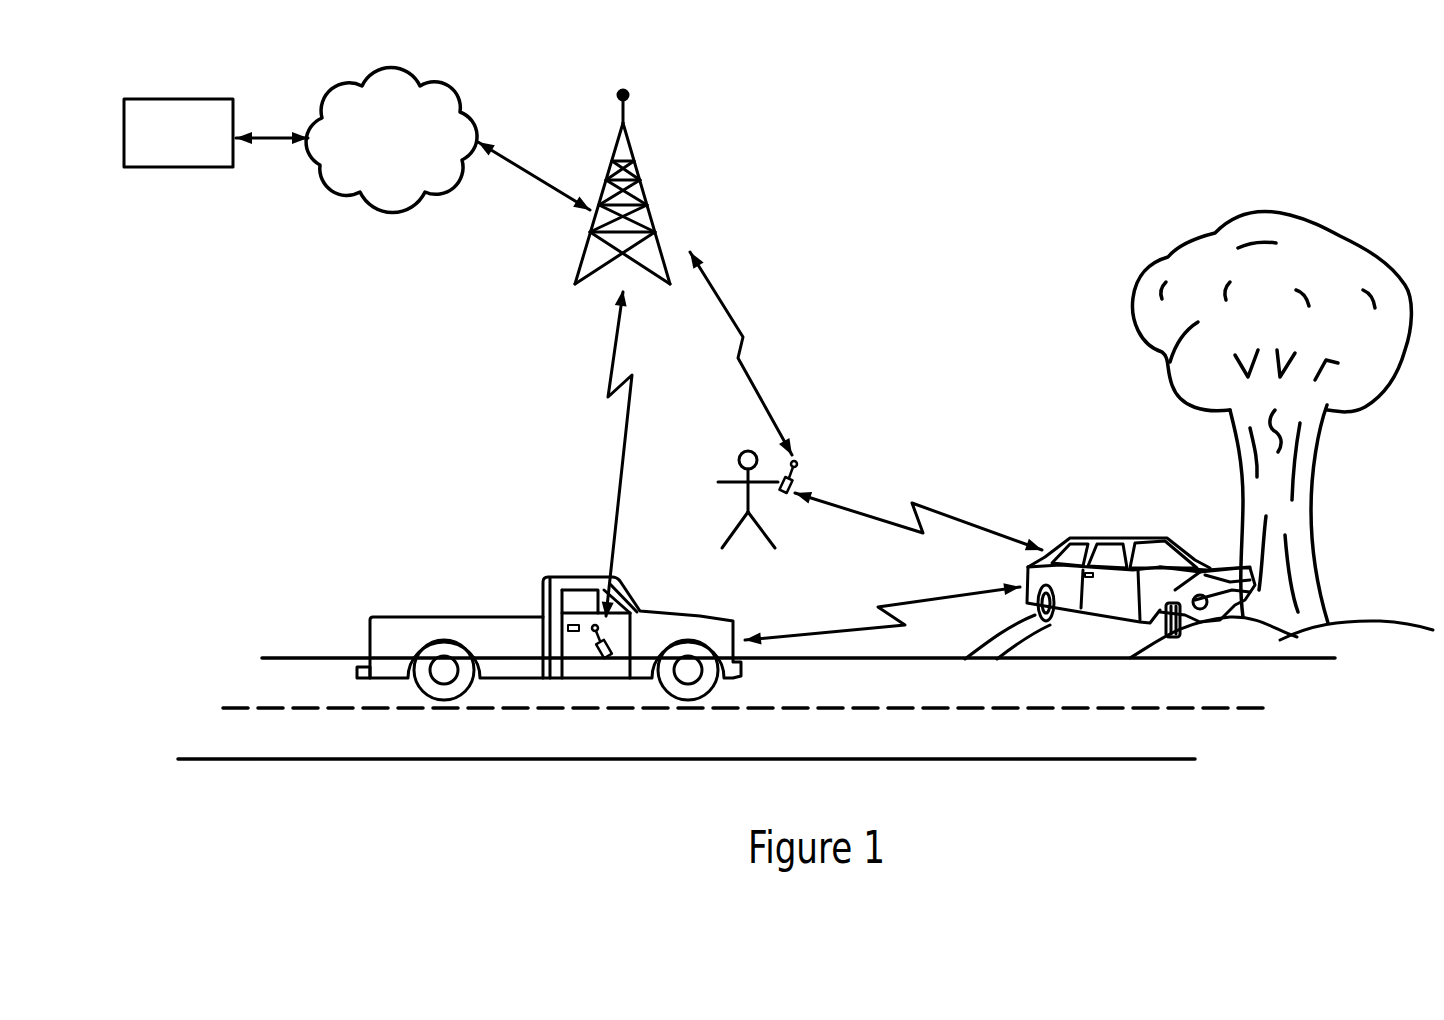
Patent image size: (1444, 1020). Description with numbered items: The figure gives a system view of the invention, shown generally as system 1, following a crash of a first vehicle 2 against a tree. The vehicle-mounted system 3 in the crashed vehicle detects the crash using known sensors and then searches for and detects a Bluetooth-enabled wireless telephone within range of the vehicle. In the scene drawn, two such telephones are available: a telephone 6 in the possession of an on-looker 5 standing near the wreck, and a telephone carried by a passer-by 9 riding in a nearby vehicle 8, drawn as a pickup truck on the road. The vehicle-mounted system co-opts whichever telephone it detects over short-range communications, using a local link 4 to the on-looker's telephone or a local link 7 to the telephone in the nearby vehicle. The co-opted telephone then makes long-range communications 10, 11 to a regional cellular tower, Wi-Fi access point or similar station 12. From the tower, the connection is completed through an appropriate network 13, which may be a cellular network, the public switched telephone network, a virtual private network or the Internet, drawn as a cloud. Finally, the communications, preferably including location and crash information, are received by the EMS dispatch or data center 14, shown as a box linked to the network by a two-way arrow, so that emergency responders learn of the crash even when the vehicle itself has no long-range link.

The system 1 is at (1168, 98).
The first vehicle 2 is at (1123, 538).
The vehicle-mounted system 3 is at (1147, 588).
The local link 4 is at (930, 513).
The on-looker 5 is at (742, 454).
The telephone 6 is at (800, 474).
The local link 7 is at (832, 632).
The nearby vehicle 8 is at (683, 613).
The passer-by 9 is at (628, 612).
The long-range communications 10 is at (605, 372).
The long-range communications 11 is at (772, 358).
The regional cellular tower 12 is at (633, 148).
The network 13 is at (378, 184).
The EMS dispatch 14 is at (180, 167).